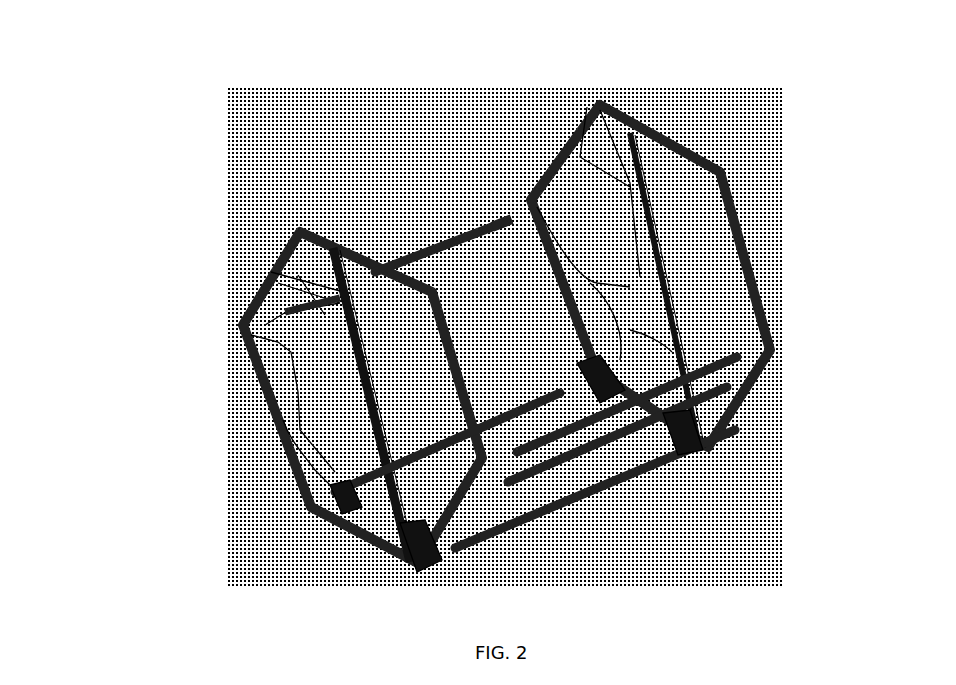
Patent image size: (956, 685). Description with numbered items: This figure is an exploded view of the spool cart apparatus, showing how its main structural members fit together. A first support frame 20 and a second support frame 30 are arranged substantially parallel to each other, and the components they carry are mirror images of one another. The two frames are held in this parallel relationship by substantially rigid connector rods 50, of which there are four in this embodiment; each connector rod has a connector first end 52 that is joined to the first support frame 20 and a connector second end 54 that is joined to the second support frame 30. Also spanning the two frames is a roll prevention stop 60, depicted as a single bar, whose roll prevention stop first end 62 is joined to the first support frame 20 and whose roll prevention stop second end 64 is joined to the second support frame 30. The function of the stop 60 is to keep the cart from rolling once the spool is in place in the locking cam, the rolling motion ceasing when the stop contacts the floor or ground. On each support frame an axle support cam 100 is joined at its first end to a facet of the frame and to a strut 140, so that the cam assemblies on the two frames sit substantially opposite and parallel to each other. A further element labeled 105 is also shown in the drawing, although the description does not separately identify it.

The first support frame 20 is at (243, 356).
The second support frame 30 is at (752, 230).
The connector rod 50 is at (583, 497).
The connector first end 52 is at (427, 575).
The connector second end 54 is at (688, 452).
The roll prevention stop 60 is at (430, 243).
The roll prevention stop first end 62 is at (305, 290).
The roll prevention stop second end 64 is at (506, 220).
The axle support cam 100 is at (330, 412).
The rod 105 is at (672, 308).
The strut 140 is at (378, 557).